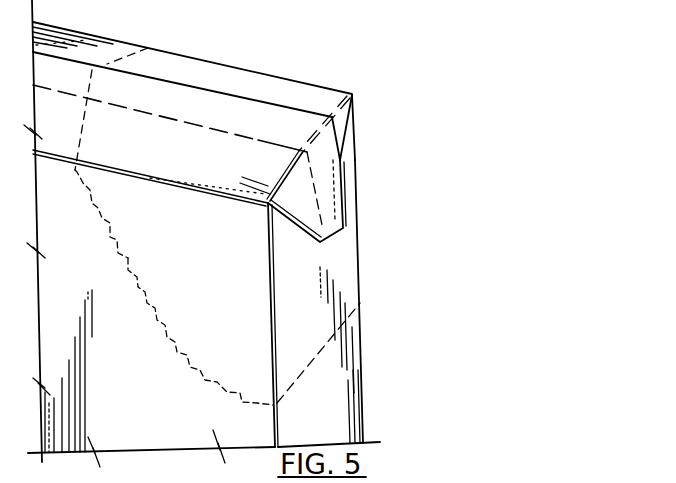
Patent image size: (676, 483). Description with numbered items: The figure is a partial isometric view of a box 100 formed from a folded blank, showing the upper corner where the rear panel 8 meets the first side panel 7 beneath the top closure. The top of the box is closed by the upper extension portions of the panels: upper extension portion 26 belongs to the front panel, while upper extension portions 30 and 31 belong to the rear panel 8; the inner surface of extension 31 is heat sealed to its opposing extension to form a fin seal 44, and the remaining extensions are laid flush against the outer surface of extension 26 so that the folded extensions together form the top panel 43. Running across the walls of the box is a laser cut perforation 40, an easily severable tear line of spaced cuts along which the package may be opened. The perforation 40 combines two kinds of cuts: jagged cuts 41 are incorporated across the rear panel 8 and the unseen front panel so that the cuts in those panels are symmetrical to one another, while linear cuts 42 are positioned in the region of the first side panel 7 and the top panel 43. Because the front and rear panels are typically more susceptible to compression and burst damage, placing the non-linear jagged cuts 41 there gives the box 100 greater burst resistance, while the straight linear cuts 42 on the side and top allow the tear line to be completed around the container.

The box 100 is at (266, 52).
The upper extension portion 26 is at (188, 70).
The upper extension portion 31 is at (292, 125).
The upper extension portion 30 is at (229, 169).
The top panel 43 is at (327, 98).
The fin seal 44 is at (344, 202).
The linear cuts 42 is at (78, 133).
The jagged cuts 41 is at (110, 226).
The laser cut perforation 40 is at (118, 265).
The rear panel 8 is at (146, 419).
The first side panel 7 is at (328, 413).